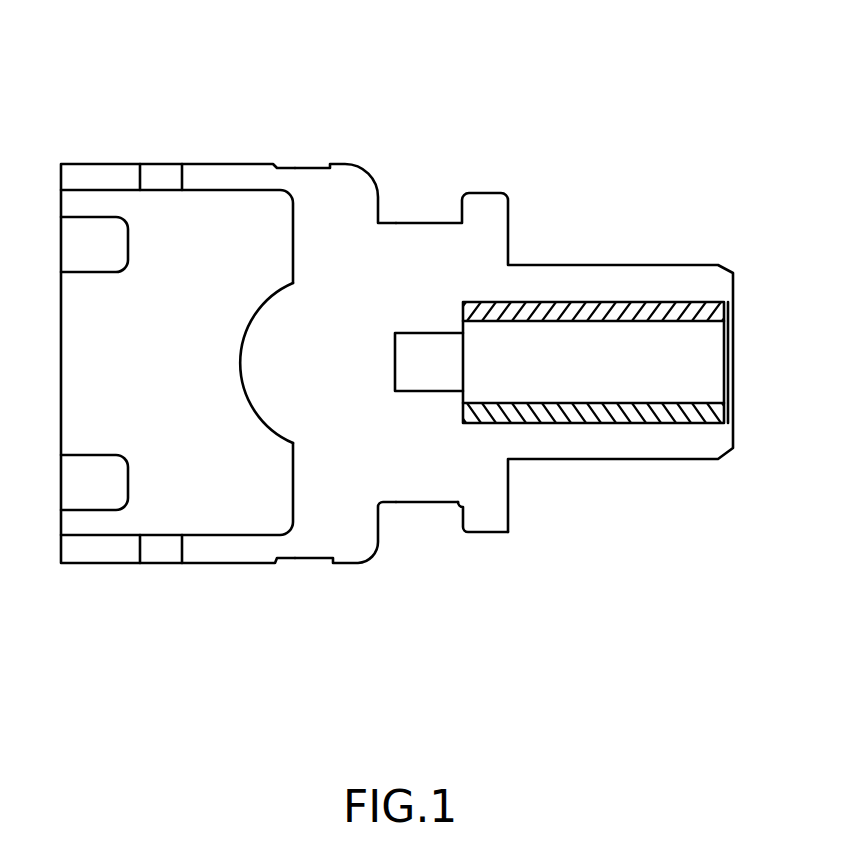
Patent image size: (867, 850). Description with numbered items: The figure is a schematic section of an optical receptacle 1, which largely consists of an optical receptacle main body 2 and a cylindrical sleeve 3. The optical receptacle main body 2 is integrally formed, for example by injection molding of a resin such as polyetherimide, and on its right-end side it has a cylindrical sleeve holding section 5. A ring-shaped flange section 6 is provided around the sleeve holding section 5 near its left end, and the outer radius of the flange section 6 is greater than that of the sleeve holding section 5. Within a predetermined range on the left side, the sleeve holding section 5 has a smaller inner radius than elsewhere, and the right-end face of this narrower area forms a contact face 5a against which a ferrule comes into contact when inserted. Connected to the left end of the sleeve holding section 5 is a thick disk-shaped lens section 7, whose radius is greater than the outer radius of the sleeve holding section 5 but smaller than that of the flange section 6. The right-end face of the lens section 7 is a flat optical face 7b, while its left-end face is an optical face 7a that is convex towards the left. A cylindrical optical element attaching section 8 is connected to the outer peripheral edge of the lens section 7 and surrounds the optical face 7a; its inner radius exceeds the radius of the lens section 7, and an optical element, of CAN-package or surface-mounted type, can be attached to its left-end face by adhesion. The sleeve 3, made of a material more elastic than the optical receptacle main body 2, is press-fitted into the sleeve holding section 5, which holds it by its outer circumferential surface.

The optical receptacle 1 is at (535, 97).
The optical receptacle main body 2 is at (417, 223).
The sleeve 3 is at (597, 300).
The sleeve holding section 5 is at (565, 434).
The contact face 5a is at (465, 330).
The flange section 6 is at (530, 525).
The lens section 7 is at (291, 419).
The optical face 7a is at (242, 358).
The optical face 7b is at (429, 452).
The optical element attaching section 8 is at (62, 568).